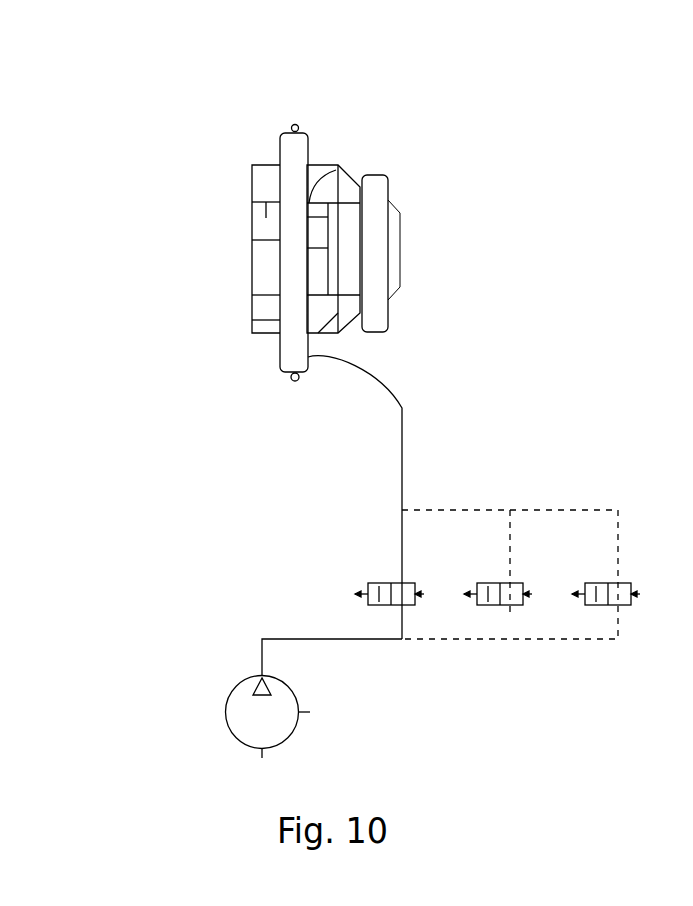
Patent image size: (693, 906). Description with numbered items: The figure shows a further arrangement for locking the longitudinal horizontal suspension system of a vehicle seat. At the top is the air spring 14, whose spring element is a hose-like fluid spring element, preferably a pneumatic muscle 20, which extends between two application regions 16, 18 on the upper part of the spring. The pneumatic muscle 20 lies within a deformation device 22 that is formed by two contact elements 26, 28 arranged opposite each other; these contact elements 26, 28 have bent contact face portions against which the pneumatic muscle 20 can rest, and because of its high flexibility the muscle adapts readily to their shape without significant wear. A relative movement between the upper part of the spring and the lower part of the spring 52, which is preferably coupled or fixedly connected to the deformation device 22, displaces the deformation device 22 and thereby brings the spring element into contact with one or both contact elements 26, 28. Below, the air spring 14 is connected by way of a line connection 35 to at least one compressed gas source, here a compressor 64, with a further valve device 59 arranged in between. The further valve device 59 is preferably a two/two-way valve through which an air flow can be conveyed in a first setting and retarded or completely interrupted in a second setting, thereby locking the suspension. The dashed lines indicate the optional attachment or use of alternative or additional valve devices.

The air spring 14 is at (221, 335).
The application region 16 is at (337, 200).
The application region 18 is at (263, 453).
The pneumatic muscle 20 is at (241, 372).
The deformation device 22 is at (387, 201).
The contact element 26 is at (261, 241).
The contact element 28 is at (475, 201).
The line connection 35 is at (430, 495).
The lower part of the spring 52 is at (485, 250).
The further valve device 59 is at (261, 584).
The compressor 64 is at (219, 698).